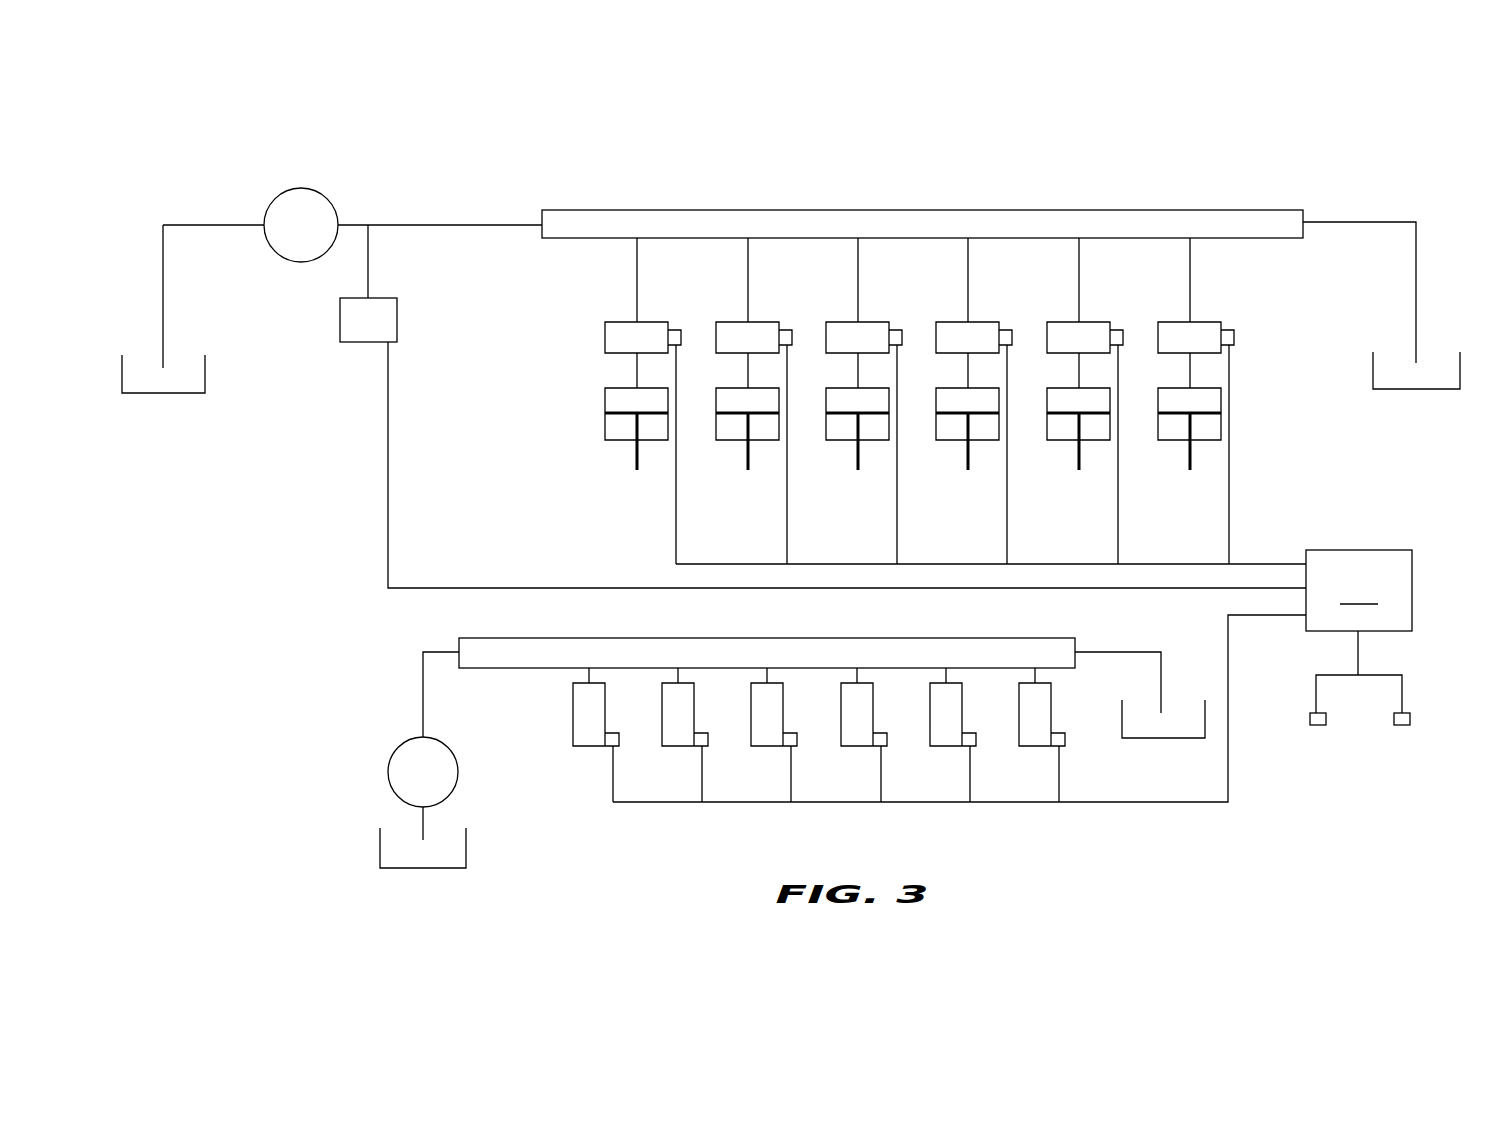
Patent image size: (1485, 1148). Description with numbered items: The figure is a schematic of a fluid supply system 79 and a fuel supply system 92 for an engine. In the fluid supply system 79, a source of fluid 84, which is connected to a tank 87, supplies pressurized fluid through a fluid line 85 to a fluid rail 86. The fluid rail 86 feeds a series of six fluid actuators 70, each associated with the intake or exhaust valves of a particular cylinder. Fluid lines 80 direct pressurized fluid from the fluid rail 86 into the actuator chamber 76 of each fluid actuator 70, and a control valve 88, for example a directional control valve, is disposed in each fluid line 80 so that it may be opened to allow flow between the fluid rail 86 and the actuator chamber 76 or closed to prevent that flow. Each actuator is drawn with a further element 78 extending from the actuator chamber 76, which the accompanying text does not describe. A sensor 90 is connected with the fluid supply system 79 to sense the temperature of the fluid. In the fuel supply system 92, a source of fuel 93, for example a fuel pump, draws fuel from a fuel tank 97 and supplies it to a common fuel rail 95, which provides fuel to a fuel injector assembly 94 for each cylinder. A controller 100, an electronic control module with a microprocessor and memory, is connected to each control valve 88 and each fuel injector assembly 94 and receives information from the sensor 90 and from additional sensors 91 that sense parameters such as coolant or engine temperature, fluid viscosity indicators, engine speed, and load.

The fluid actuator 70 is at (862, 385).
The actuator chamber 76 is at (1163, 405).
The injector needle 78 is at (1186, 460).
The fluid supply system 79 is at (979, 223).
The fluid line 80 is at (1185, 372).
The source of fluid 84 is at (300, 188).
The fluid line 85 is at (390, 225).
The fluid rail 86 is at (820, 210).
The tank 87 is at (165, 393).
The control valve 88 is at (1163, 330).
The sensor 90 is at (372, 345).
The sensors 91 is at (1318, 727).
The fuel supply system 92 is at (724, 731).
The source of fuel 93 is at (388, 772).
The fuel injector assembly 94 is at (1075, 710).
The common fuel rail 95 is at (1037, 658).
The fuel tank 97 is at (380, 843).
The controller 100 is at (1359, 590).